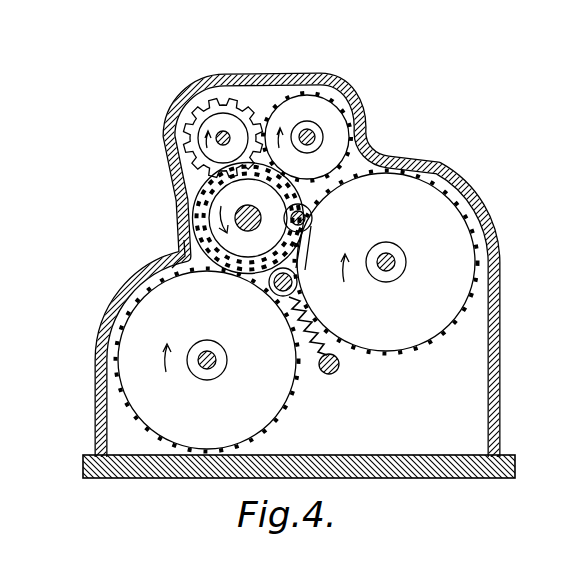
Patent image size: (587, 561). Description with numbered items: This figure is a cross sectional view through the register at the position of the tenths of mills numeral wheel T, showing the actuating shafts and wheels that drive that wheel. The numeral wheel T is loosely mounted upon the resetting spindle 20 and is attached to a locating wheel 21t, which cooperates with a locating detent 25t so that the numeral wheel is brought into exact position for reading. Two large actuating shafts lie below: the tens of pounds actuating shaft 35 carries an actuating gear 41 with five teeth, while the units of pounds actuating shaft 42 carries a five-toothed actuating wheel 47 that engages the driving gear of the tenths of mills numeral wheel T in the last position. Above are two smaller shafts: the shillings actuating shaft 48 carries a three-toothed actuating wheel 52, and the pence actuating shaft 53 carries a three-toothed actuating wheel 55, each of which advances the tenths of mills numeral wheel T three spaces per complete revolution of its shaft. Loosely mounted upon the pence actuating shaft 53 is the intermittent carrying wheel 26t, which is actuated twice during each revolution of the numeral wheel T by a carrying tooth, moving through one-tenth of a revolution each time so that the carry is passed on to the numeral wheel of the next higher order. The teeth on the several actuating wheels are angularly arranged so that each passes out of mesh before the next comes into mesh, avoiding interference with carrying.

The tenths of mills numeral wheel T is at (178, 194).
The locating wheel 21t is at (182, 245).
The intermittent carrying wheel 26t is at (192, 108).
The three-toothed actuating wheel 55 is at (222, 122).
The pence actuating shaft 53 is at (220, 150).
The three-toothed actuating wheel 52 is at (323, 108).
The shillings actuating shaft 48 is at (320, 132).
The resetting spindle 20 is at (234, 220).
The locating detent 25t is at (270, 292).
The units of pounds actuating shaft 42 is at (395, 262).
The five-toothed actuating wheel 47 is at (438, 330).
The actuating gear 41 is at (259, 430).
The tens of pounds actuating shaft 35 is at (197, 367).